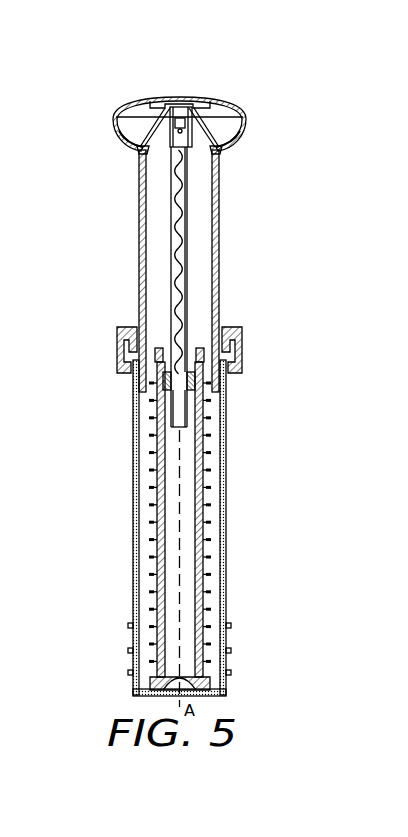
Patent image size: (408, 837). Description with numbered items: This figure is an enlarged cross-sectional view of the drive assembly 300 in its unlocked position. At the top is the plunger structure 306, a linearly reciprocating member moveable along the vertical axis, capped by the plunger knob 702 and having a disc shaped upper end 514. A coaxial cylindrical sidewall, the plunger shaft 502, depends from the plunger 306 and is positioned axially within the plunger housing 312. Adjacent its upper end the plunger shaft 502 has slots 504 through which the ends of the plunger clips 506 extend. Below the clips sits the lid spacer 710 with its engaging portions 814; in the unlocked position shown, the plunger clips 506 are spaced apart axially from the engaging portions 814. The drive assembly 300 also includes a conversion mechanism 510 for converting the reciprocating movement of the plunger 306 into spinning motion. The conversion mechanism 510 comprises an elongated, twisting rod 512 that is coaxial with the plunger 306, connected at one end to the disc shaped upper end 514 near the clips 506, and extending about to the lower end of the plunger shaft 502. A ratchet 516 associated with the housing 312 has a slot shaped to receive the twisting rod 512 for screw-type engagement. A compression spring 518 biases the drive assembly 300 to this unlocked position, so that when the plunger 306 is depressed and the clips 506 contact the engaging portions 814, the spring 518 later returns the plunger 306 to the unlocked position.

The drive assembly 300 is at (227, 80).
The plunger structure 306 is at (133, 97).
The plunger knob 702 is at (242, 110).
The disc shaped upper end 514 is at (122, 136).
The plunger clips 506 is at (138, 149).
The slots 504 is at (137, 155).
The plunger shaft 502 is at (138, 271).
The conversion mechanism 510 is at (199, 290).
The elongated twisting rod 512 is at (173, 295).
The engaging portions 814 is at (124, 322).
The lid spacer 710 is at (242, 335).
The ratchet 516 is at (204, 388).
The compression spring 518 is at (209, 483).
The plunger housing 312 is at (135, 502).